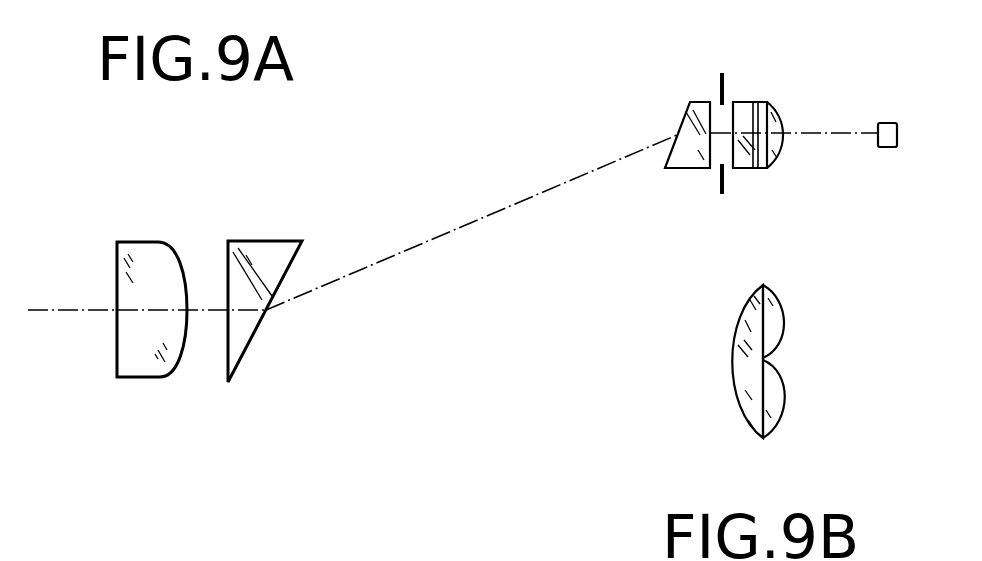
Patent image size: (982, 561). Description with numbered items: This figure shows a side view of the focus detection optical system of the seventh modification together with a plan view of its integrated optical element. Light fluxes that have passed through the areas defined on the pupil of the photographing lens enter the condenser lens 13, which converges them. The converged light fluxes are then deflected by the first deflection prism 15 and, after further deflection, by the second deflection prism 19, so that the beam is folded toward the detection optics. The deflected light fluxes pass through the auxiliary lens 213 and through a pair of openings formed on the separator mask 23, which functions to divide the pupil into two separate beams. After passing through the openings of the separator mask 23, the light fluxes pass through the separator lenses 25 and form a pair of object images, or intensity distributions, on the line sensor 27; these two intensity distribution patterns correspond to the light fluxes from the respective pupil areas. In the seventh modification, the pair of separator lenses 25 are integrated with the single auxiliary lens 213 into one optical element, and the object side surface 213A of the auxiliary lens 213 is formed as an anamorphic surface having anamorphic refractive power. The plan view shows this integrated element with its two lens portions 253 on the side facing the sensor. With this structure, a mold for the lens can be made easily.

In FIG. 9A, the condenser lens 13 is at (128, 296).
In FIG. 9A, the first deflection prism 15 is at (262, 257).
In FIG. 9A, the second deflection prism 19 is at (692, 107).
In FIG. 9A, the separator mask 23 is at (726, 96).
In FIG. 9A, the separator lenses 25 is at (782, 150).
In FIG. 9A, the line sensor 27 is at (888, 128).
In FIG. 9A, the auxiliary lens 213 is at (744, 166).
In FIG. 9B, the auxiliary lens 213 is at (746, 387).
In FIG. 9B, the object side surface 213A is at (738, 322).
In FIG. 9B, the lens portion 253 is at (785, 328).